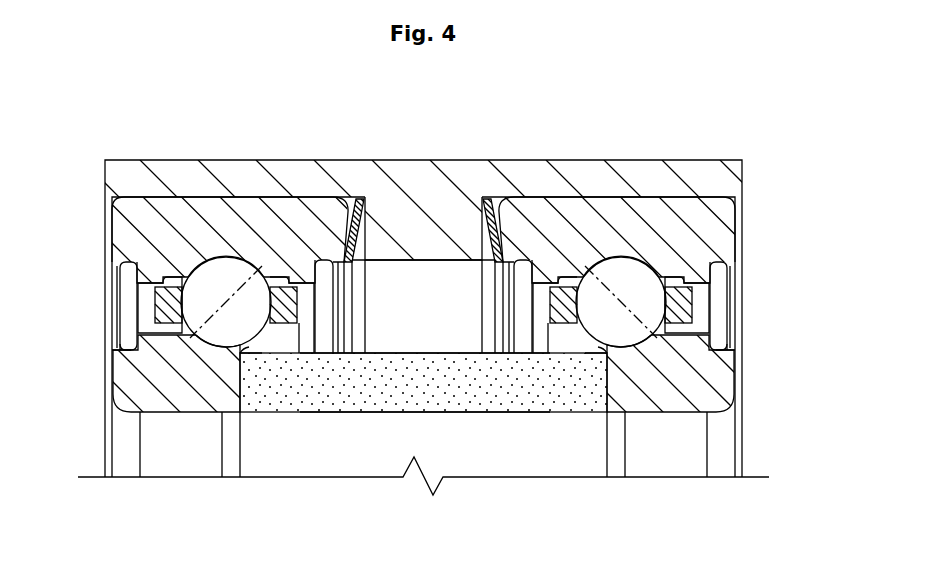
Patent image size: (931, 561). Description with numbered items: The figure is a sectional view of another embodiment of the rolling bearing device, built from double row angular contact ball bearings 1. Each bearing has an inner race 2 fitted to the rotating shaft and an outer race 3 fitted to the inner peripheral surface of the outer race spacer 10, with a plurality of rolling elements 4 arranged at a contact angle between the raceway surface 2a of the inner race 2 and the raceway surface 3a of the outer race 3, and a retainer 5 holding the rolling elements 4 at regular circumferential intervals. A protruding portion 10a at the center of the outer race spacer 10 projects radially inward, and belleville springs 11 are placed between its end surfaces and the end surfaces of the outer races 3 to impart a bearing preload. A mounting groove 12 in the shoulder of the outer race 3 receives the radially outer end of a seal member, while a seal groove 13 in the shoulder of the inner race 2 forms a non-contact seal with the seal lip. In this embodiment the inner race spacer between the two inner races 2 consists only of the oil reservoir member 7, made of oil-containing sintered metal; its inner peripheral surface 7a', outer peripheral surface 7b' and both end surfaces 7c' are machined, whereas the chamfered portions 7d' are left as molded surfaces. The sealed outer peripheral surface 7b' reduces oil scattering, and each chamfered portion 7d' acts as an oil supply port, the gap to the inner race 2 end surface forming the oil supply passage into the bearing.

The angular contact ball bearing 1 is at (111, 218).
The inner race 2 is at (130, 378).
The raceway surface of the inner race 2a is at (197, 343).
The outer race 3 is at (130, 238).
The raceway surface of the outer race 3a is at (241, 258).
The rolling element 4 is at (207, 275).
The retainer 5 is at (163, 302).
The oil reservoir member 7 is at (477, 413).
The inner peripheral surface 7a' is at (425, 467).
The outer peripheral surface 7b' is at (425, 330).
The end surface 7c' is at (426, 435).
The chamfered portion 7d' is at (423, 435).
The outer race spacer 10 is at (402, 172).
The protruding portion 10a is at (432, 240).
The belleville spring 11 is at (347, 200).
The mounting groove 12 is at (118, 274).
The seal groove 13 is at (118, 339).